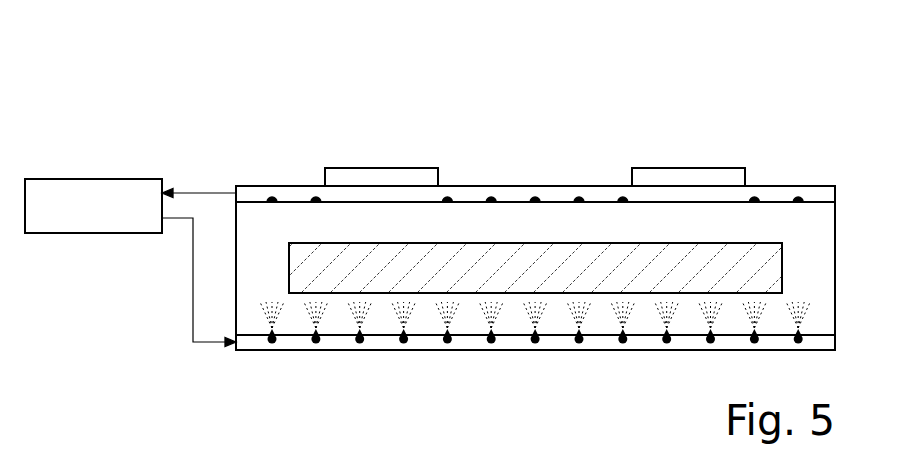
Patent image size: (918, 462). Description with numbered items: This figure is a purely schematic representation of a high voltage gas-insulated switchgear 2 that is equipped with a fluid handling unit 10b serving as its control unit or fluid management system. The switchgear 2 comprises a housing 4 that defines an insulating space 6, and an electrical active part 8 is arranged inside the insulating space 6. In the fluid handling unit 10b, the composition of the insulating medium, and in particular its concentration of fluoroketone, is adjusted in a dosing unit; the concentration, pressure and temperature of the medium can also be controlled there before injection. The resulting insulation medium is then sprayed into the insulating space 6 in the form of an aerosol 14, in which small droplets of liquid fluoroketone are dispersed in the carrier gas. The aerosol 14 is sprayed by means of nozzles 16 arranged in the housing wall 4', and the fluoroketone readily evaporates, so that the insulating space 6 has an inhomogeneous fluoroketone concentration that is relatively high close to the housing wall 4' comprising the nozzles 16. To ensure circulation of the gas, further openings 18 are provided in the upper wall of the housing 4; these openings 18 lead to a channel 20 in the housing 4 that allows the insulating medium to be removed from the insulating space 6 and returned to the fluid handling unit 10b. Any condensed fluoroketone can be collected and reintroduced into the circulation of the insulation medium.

The switchgear 2 is at (673, 113).
The housing 4 is at (539, 137).
The housing wall 4' is at (535, 387).
The insulating space 6 is at (547, 222).
The electrical active part 8 is at (440, 274).
The fluid handling unit 10b is at (93, 177).
The aerosol 14 is at (612, 308).
The nozzles 16 is at (663, 343).
The openings 18 is at (450, 193).
The channel 20 is at (513, 192).